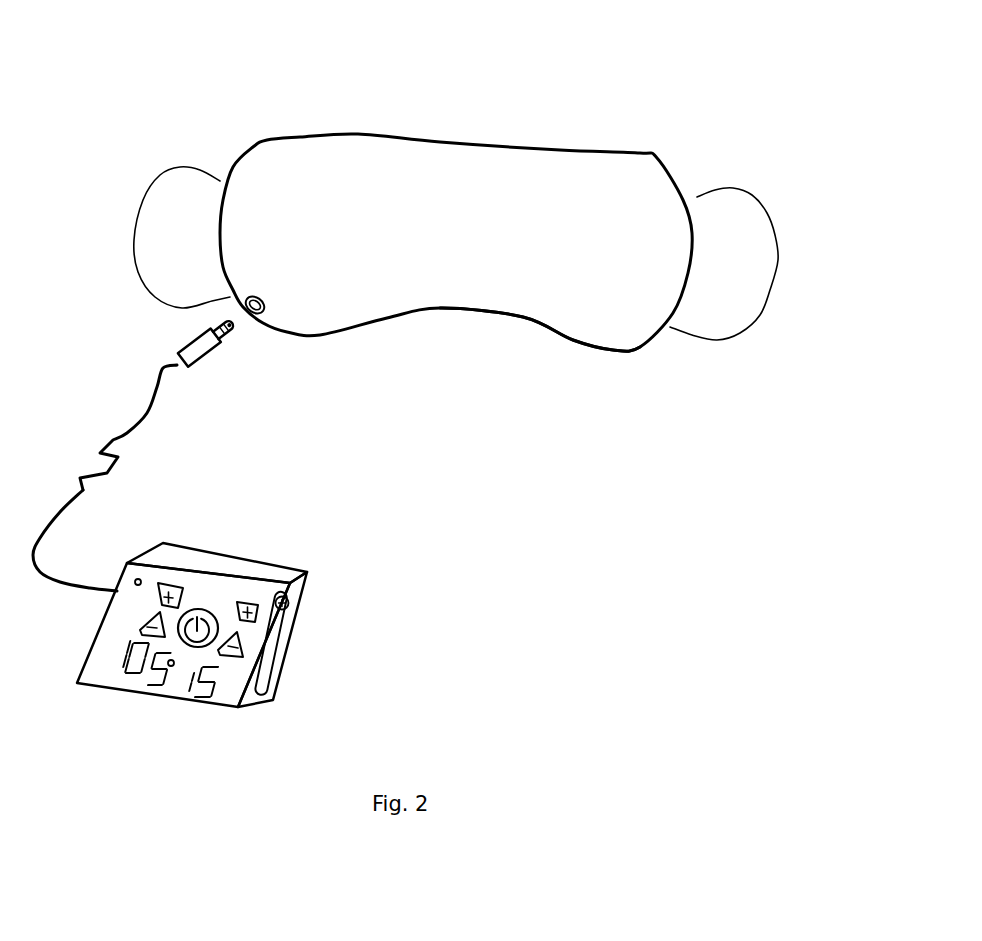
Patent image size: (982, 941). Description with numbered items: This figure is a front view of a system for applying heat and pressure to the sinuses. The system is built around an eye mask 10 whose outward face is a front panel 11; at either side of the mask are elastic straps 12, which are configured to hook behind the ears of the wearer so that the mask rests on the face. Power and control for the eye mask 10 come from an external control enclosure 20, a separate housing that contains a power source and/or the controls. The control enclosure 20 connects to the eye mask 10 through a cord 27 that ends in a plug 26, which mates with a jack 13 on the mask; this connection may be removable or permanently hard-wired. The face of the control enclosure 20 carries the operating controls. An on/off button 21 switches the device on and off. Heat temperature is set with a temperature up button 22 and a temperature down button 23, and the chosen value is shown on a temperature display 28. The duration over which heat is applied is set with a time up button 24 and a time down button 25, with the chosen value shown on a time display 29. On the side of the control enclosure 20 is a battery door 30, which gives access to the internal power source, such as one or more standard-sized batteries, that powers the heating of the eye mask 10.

The eye mask 10 is at (492, 100).
The front panel 11 is at (623, 349).
The elastic straps 12 is at (146, 186).
The jack 13 is at (263, 313).
The external control enclosure 20 is at (228, 503).
The on/off button 21 is at (193, 607).
The temperature up button 22 is at (160, 581).
The temperature down button 23 is at (152, 616).
The time up button 24 is at (259, 602).
The time down button 25 is at (243, 658).
The plug 26 is at (207, 353).
The cord 27 is at (58, 500).
The temperature display 28 is at (122, 678).
The time display 29 is at (193, 692).
The battery door 30 is at (283, 607).